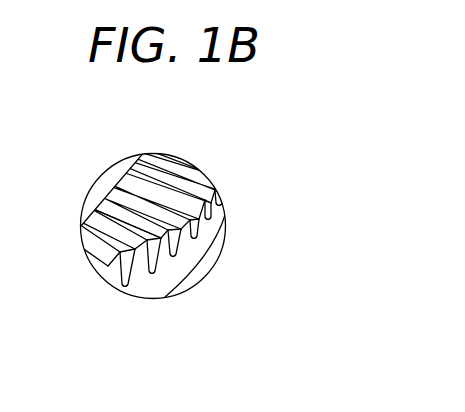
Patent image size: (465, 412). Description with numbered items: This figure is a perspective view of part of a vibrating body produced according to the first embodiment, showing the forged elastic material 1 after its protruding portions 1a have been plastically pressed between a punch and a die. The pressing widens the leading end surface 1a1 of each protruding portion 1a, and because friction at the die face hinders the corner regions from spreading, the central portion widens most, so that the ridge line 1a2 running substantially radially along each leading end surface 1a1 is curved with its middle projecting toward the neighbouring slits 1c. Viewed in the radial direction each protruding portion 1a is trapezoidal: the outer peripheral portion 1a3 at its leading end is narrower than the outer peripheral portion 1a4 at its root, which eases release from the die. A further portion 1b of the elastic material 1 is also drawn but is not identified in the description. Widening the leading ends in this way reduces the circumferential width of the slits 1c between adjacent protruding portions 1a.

The elastic material 1 is at (377, 397).
The protruding portions 1a is at (328, 285).
The leading end surface 1a1 is at (174, 174).
The ridge line 1a2 is at (195, 184).
The outer peripheral portion on the leading end 1a3 is at (181, 240).
The outer peripheral portion on the root portion 1a4 is at (170, 261).
The base portion 1b is at (142, 300).
The slits 1c is at (152, 264).